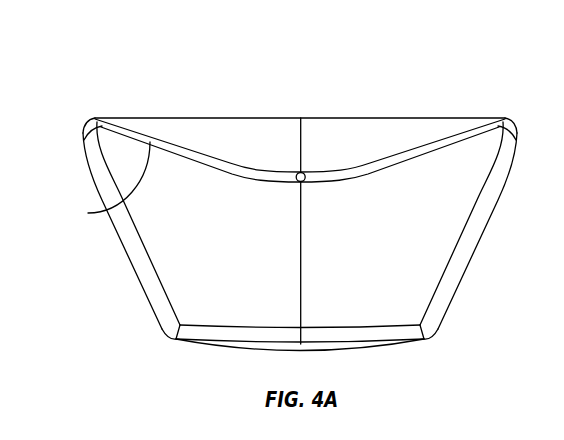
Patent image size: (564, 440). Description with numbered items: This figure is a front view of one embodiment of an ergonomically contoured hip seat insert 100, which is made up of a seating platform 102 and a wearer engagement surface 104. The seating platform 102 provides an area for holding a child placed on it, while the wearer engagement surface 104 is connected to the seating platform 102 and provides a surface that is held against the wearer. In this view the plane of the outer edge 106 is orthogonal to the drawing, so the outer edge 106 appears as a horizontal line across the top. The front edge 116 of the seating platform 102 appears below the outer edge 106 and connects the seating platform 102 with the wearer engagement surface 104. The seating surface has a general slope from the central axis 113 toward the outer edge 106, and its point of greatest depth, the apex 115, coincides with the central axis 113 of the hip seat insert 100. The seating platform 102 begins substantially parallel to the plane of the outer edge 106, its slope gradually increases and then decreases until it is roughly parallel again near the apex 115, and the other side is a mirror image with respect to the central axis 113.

The hip seat insert 100 is at (482, 78).
The seating platform 102 is at (240, 133).
The wearer engagement surface 104 is at (192, 268).
The outer edge 106 is at (92, 118).
The central axis 113 is at (301, 268).
The apex 115 is at (304, 172).
The front edge 116 is at (88, 213).